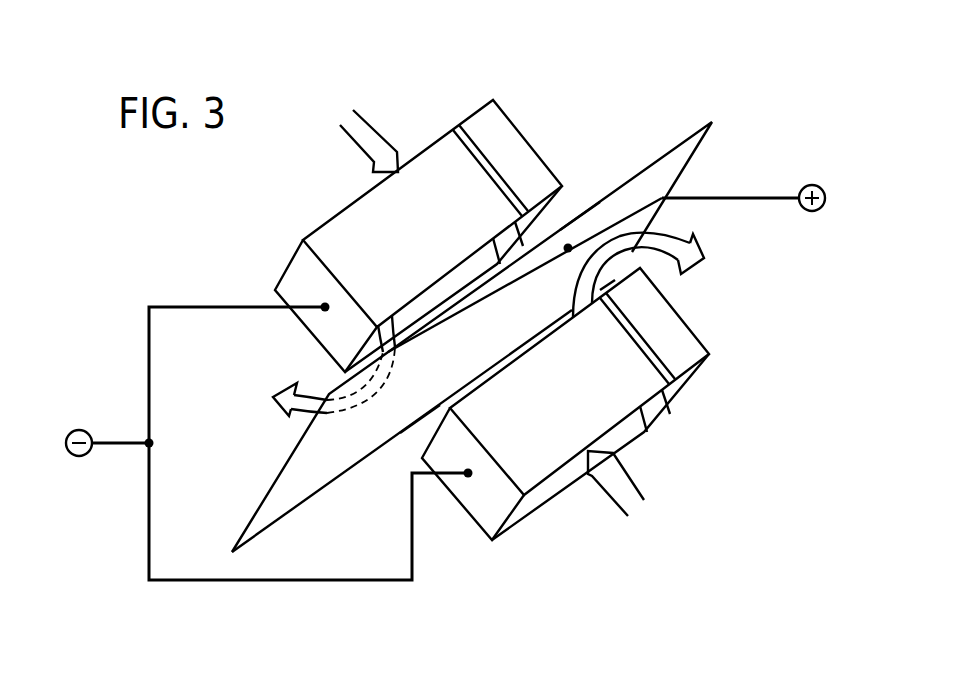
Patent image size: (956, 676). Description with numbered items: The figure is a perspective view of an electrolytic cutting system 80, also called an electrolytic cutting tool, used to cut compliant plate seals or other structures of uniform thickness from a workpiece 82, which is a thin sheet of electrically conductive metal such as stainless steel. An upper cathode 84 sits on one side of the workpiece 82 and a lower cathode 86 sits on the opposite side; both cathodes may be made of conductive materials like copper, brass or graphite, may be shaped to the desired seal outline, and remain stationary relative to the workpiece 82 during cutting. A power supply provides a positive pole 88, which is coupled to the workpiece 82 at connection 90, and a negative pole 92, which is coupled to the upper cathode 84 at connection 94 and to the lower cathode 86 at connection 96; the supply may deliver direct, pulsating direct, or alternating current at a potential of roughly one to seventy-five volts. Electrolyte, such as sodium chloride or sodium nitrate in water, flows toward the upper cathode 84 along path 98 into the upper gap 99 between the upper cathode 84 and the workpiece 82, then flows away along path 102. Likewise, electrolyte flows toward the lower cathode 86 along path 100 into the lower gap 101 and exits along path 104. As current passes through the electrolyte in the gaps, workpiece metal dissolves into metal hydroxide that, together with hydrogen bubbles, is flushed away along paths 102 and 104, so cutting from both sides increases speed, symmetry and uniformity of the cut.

The electrolytic cutting system 80 is at (566, 85).
The workpiece 82 is at (637, 186).
The upper cathode 84 is at (351, 212).
The lower cathode 86 is at (483, 522).
The positive pole 88 is at (812, 184).
The connection 90 is at (566, 251).
The negative pole 92 is at (80, 429).
The connection 94 is at (325, 313).
The connection 96 is at (468, 480).
The path 98 is at (373, 131).
The upper gap 99 is at (562, 213).
The path 100 is at (628, 478).
The lower gap 101 is at (421, 425).
The path 102 is at (288, 416).
The path 104 is at (671, 268).